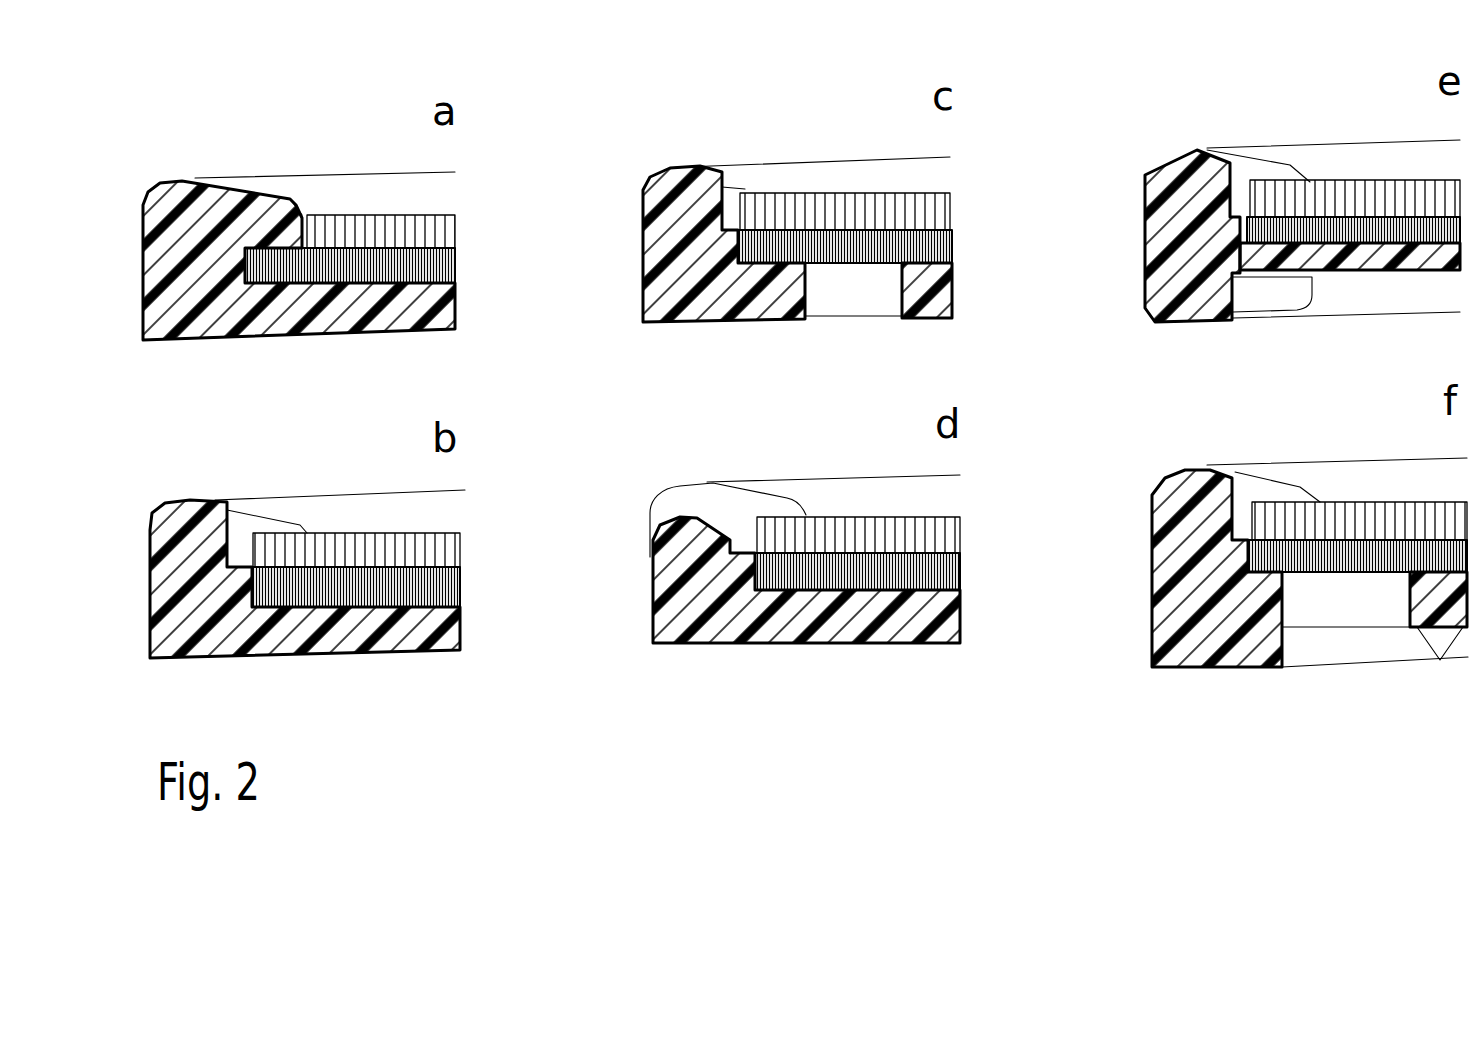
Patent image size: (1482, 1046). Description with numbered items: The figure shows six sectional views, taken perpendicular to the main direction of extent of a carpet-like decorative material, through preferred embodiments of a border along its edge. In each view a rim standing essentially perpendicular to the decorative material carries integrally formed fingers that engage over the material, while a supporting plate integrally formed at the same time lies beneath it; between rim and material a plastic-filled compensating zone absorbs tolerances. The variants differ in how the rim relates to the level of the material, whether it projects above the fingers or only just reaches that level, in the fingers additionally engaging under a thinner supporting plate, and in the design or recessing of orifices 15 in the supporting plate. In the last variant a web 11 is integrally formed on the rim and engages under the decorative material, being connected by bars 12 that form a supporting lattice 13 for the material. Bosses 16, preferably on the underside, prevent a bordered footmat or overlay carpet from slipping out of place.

The web 11 is at (1200, 650).
The bars 12 is at (1410, 628).
The supporting lattice 13 is at (1340, 608).
The orifices 15 is at (862, 295).
The bosses 16 is at (1425, 629).